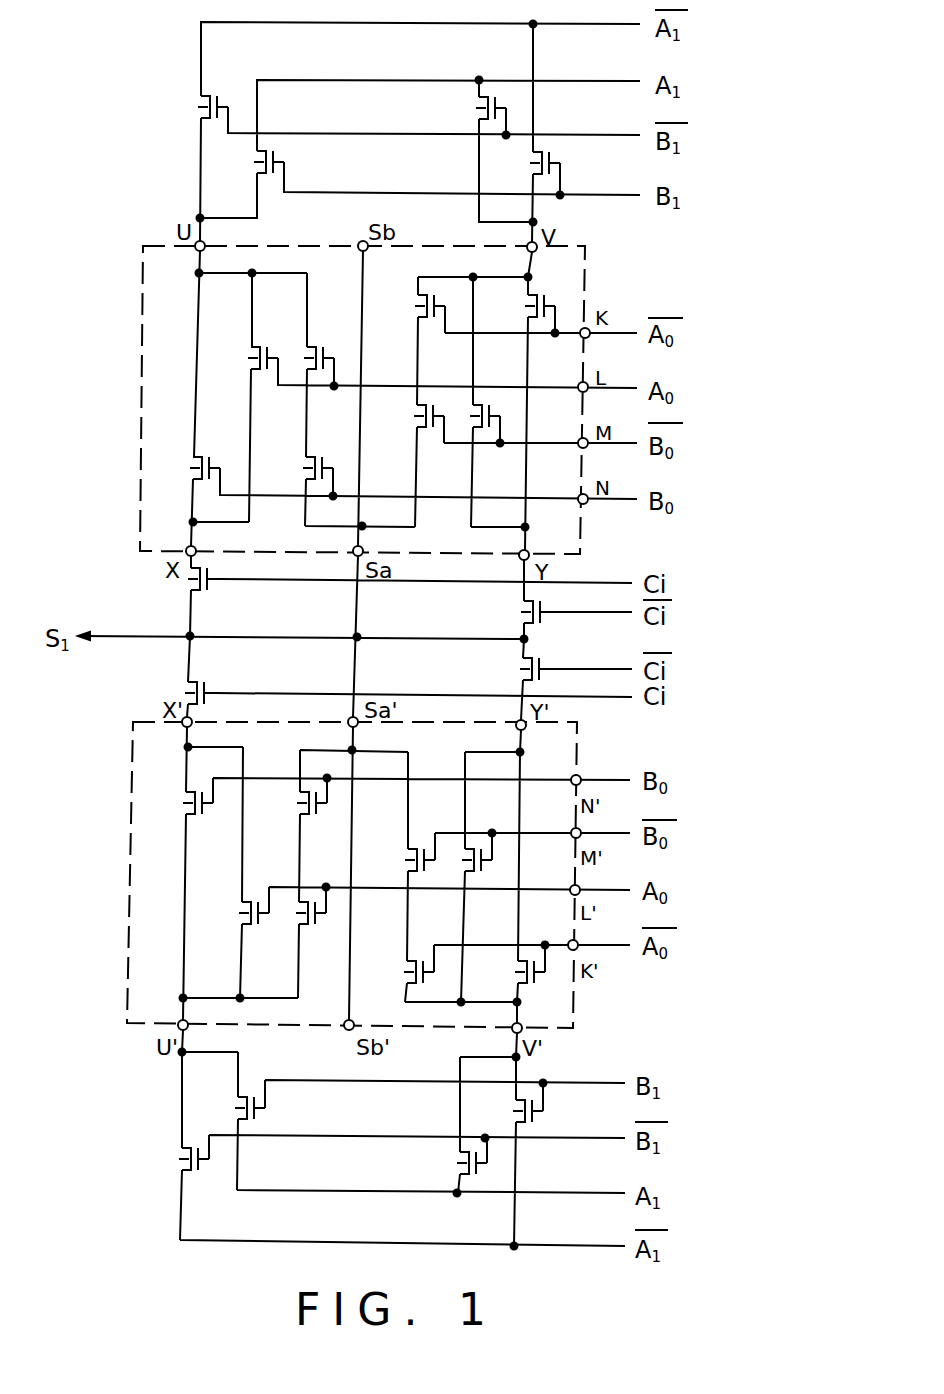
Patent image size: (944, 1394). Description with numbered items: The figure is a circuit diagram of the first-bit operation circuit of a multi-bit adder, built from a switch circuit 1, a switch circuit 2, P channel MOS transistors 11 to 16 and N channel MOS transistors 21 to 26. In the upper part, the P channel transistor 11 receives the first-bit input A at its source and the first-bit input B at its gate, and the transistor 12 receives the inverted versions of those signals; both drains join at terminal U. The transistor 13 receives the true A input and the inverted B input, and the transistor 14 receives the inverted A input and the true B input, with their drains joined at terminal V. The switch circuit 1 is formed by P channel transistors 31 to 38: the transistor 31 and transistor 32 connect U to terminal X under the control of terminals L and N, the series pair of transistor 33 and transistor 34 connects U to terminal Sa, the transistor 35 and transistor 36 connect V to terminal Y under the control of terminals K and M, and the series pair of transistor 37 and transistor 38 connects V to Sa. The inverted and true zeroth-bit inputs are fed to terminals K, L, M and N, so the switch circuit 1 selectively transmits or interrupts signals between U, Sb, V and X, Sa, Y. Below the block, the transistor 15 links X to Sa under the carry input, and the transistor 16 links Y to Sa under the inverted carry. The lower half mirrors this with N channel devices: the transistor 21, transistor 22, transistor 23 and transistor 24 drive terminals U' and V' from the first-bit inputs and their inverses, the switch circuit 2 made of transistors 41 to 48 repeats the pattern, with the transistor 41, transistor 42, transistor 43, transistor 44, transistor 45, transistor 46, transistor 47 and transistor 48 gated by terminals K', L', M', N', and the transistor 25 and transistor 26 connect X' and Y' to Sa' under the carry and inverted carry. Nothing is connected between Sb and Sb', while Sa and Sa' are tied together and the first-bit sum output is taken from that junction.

The switch circuit 1 is at (138, 432).
The switch circuit 2 is at (130, 895).
The P channel MOS transistor 11 is at (267, 175).
The P channel MOS transistor 12 is at (214, 120).
The P channel MOS transistor 13 is at (493, 96).
The P channel MOS transistor 14 is at (532, 165).
The P channel MOS transistor 15 is at (216, 591).
The P channel MOS transistor 16 is at (514, 612).
The N channel MOS transistor 21 is at (248, 1093).
The N channel MOS transistor 22 is at (197, 1173).
The N channel MOS transistor 23 is at (456, 1163).
The N channel MOS transistor 24 is at (519, 1112).
The N channel MOS transistor 25 is at (217, 683).
The N channel MOS transistor 26 is at (514, 668).
The P channel MOS transistor 31 is at (269, 346).
The P channel MOS transistor 32 is at (213, 454).
The P channel MOS transistor 33 is at (327, 346).
The P channel MOS transistor 34 is at (322, 454).
The P channel MOS transistor 35 is at (541, 297).
The P channel MOS transistor 36 is at (487, 399).
The P channel MOS transistor 37 is at (432, 319).
The P channel MOS transistor 38 is at (430, 429).
The N channel MOS transistor 41 is at (255, 928).
The N channel MOS transistor 42 is at (208, 818).
The N channel MOS transistor 43 is at (313, 928).
The N channel MOS transistor 44 is at (313, 818).
The N channel MOS transistor 45 is at (527, 989).
The N channel MOS transistor 46 is at (478, 879).
The N channel MOS transistor 47 is at (418, 958).
The N channel MOS transistor 48 is at (419, 847).